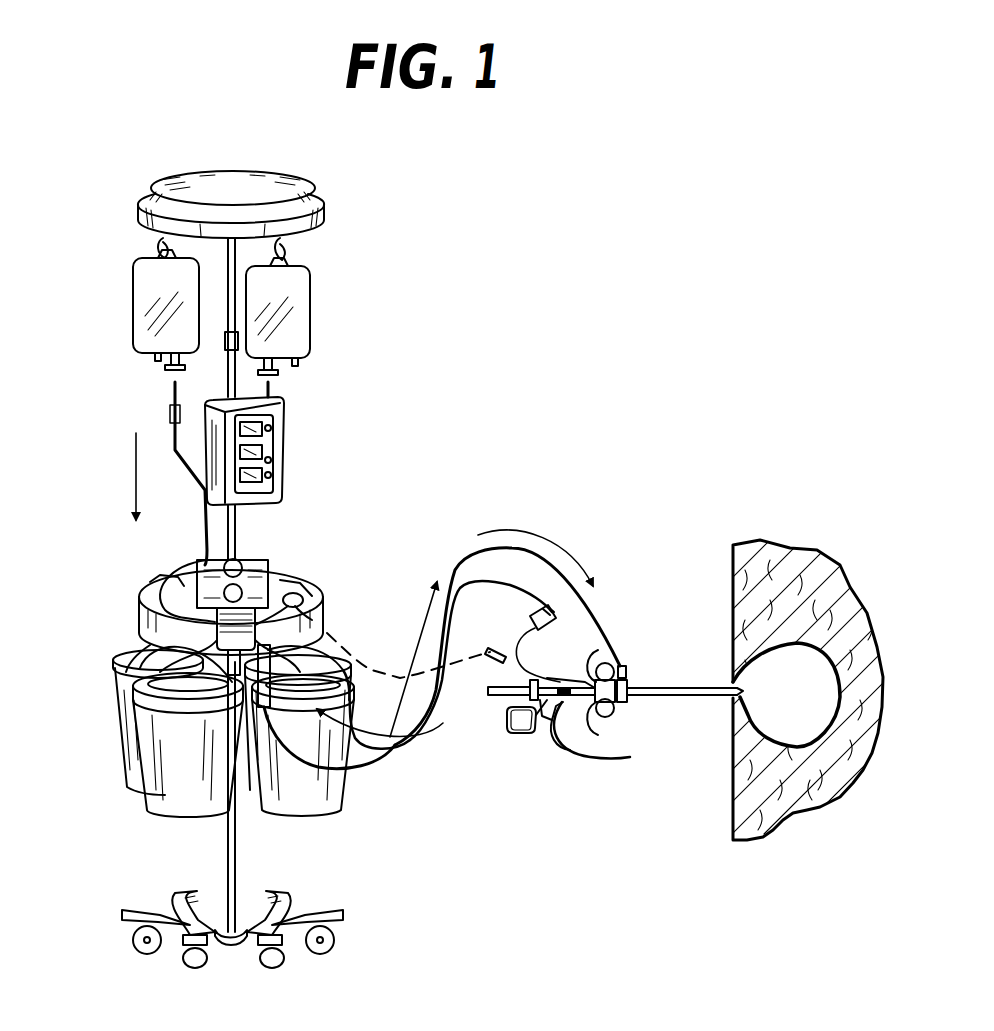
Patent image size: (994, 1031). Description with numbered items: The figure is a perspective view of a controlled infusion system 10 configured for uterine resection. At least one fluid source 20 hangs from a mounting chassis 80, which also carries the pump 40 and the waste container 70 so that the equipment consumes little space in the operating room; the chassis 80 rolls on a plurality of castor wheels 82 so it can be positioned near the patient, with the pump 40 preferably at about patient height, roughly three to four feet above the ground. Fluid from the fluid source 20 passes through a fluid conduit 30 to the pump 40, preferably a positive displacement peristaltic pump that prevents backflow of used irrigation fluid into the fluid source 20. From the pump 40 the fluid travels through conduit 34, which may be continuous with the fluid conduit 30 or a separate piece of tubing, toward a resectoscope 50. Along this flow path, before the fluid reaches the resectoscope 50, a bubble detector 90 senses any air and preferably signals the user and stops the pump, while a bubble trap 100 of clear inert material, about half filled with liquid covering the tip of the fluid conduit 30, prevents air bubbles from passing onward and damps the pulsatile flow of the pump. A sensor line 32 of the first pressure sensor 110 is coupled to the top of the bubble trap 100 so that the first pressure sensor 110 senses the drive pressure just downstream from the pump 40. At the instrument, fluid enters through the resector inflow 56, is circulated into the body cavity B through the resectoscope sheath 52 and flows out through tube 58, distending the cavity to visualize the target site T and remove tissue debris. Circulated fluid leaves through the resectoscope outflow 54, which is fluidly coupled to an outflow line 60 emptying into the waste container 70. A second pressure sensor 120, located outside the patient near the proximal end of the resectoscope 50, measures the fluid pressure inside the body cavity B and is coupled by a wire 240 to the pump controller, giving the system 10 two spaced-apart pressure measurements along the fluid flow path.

The controlled infusion system 10 is at (460, 247).
The fluid source 20 is at (148, 292).
The fluid conduit 30 is at (170, 433).
The sensor line 32 is at (272, 600).
The conduit 34 is at (360, 775).
The pump 40 is at (212, 633).
The resectoscope 50 is at (644, 808).
The resectoscope sheath 52 is at (666, 697).
The resectoscope outflow 54 is at (553, 622).
The resector inflow 56 is at (632, 655).
The tube 58 is at (740, 689).
The outflow line 60 is at (443, 722).
The waste container 70 is at (308, 800).
The mounting chassis 80 is at (190, 148).
The castor wheels 82 is at (333, 947).
The bubble detector 90 is at (150, 592).
The bubble trap 100 is at (263, 700).
The first pressure sensor 110 is at (323, 610).
The second pressure sensor 120 is at (488, 657).
The wire 240 is at (375, 668).
The target site T is at (793, 604).
The body cavity B is at (805, 709).